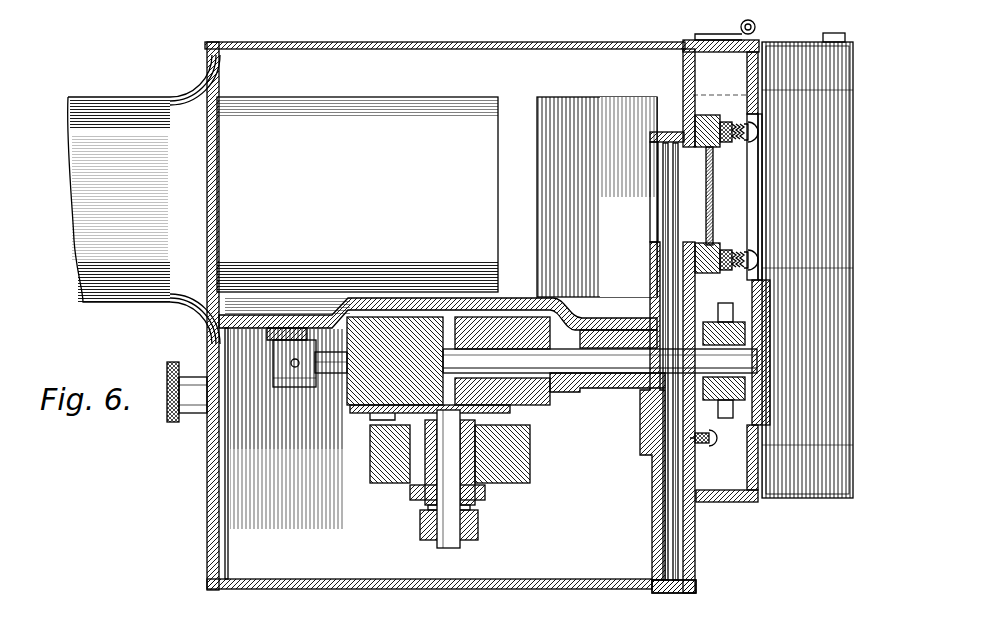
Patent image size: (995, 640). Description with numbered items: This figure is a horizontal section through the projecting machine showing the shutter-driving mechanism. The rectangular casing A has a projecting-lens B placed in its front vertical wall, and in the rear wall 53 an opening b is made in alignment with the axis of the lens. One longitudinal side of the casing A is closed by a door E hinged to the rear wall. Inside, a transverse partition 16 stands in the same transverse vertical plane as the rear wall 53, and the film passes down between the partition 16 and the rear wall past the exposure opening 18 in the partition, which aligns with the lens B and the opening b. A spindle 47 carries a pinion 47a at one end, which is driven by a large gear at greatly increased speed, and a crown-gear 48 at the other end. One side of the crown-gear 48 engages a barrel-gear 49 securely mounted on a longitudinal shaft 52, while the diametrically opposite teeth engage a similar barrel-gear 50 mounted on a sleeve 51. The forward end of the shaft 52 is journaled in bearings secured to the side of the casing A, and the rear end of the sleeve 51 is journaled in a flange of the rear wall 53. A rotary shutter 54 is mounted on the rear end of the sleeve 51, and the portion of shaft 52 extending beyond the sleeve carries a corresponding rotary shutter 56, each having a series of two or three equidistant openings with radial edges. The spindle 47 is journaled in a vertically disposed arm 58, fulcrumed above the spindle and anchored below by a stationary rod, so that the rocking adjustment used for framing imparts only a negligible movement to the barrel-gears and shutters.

The casing A is at (444, 56).
The door E is at (569, 42).
The projecting-lens B is at (357, 205).
The opening in rear wall b is at (764, 212).
The transverse partition 16 is at (683, 104).
The opening in partition 18 is at (686, 213).
The spindle 47 is at (447, 546).
The pinion 47a is at (478, 522).
The crown-gear 48 is at (378, 415).
The barrel-gear 49 is at (345, 408).
The barrel-gear 50 is at (558, 398).
The sleeve 51 is at (568, 380).
The longitudinal shaft 52 is at (313, 403).
The rear wall 53 is at (698, 528).
The rotary shutter 54 is at (660, 266).
The rotary shutter 56 is at (672, 224).
The vertically disposed arm 58 is at (486, 494).